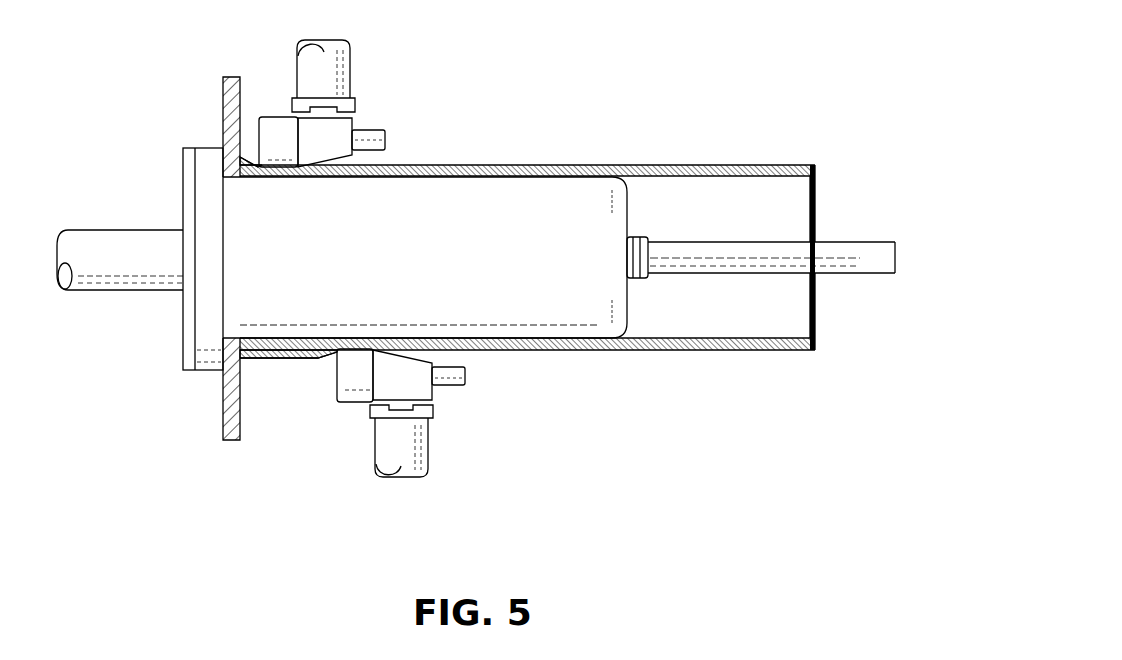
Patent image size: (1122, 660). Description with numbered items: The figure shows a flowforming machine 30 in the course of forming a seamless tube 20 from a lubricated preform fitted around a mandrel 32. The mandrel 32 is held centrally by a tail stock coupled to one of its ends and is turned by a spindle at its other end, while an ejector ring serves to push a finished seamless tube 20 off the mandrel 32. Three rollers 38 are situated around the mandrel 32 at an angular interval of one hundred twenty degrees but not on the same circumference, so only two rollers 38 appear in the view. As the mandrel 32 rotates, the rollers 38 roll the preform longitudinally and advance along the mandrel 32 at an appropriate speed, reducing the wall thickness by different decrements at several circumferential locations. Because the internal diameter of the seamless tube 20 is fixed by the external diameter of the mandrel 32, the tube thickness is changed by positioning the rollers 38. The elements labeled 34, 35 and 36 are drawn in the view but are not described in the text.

The seamless tube 20 is at (700, 167).
The flowforming machine 30 is at (486, 152).
The mandrel 32 is at (558, 213).
The piston rod 34 is at (728, 247).
The nut 35 is at (183, 342).
The mounting plate 36 is at (227, 410).
The rollers 38 is at (272, 120).